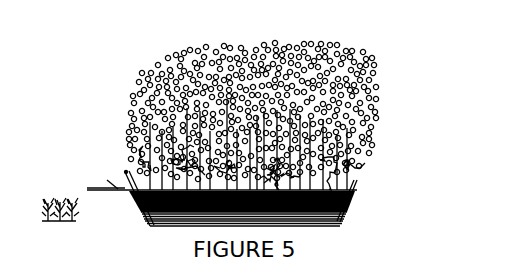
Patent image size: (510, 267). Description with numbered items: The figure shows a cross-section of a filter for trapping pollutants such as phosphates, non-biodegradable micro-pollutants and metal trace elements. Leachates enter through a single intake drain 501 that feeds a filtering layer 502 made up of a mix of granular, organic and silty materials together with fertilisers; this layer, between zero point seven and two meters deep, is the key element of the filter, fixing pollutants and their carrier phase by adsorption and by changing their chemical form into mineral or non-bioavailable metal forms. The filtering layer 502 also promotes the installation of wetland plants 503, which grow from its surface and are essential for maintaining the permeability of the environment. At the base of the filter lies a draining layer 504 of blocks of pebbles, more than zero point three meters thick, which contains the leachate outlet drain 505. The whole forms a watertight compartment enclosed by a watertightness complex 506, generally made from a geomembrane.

The drain for intaking leachates 501 is at (97, 188).
The filtering layer 502 is at (145, 205).
The wetland plants 503 is at (340, 166).
The draining layer 504 is at (180, 228).
The leachate outlet drain 505 is at (340, 218).
The watertightness complex 506 is at (355, 197).